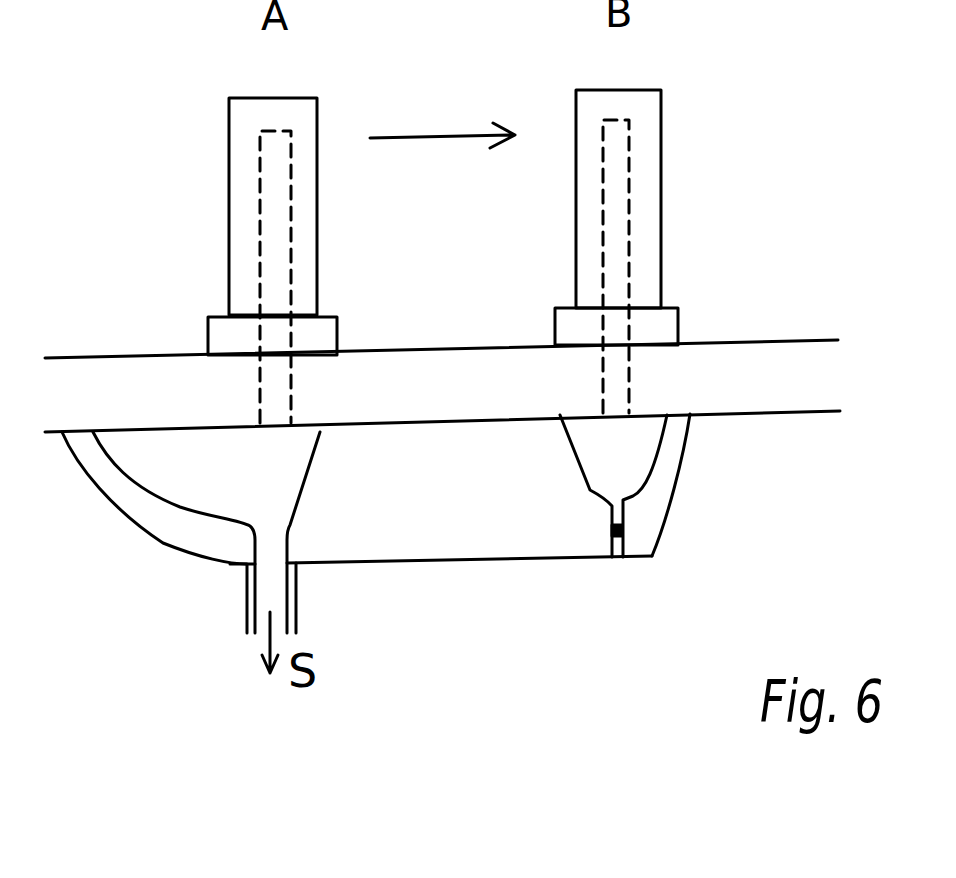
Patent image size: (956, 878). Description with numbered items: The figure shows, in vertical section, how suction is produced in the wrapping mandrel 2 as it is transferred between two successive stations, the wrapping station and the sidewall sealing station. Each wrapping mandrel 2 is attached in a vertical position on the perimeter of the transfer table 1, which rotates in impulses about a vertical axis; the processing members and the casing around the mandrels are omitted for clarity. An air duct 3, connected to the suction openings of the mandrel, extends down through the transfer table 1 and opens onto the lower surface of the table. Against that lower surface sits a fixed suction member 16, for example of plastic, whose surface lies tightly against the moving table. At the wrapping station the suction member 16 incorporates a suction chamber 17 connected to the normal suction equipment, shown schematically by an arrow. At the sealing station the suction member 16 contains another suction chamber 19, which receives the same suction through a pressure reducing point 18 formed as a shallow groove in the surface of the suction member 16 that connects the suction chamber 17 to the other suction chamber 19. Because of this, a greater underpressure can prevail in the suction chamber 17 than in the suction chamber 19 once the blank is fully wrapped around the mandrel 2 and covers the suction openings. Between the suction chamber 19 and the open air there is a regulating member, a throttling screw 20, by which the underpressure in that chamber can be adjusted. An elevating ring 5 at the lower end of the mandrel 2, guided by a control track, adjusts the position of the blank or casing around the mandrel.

The transfer table 1 is at (763, 393).
The wrapping mandrel 2 is at (305, 233).
The air duct 3 is at (290, 265).
The elevating ring 5 is at (218, 338).
The suction member 16 is at (445, 543).
The suction chamber 17 is at (300, 460).
The pressure reducing point 18 is at (497, 418).
The other suction chamber 19 is at (627, 482).
The throttling screw 20 is at (612, 533).